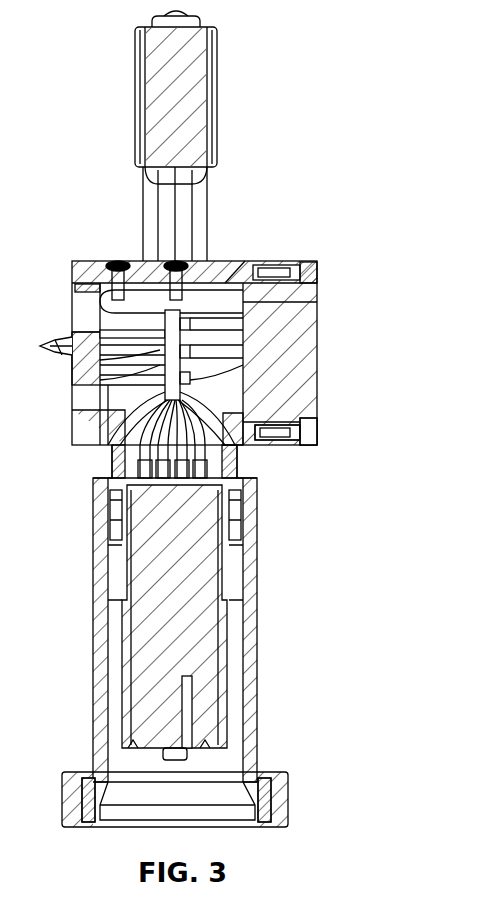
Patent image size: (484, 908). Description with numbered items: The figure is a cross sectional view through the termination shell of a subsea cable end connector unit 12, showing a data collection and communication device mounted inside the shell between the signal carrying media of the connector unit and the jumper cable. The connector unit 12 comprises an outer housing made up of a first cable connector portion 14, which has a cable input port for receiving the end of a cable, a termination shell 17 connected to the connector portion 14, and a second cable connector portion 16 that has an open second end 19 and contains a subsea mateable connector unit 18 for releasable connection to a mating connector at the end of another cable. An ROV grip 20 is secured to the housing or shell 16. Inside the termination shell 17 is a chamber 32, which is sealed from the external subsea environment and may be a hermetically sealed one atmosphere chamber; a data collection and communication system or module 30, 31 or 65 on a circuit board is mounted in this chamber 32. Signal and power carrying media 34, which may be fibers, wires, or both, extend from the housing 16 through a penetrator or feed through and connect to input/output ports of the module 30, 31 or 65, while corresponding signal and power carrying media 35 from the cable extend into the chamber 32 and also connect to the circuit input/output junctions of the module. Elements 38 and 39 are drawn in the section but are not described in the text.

The end connector unit 12 is at (322, 497).
The first cable connector portion 14 is at (80, 265).
The second cable connector portion 16 is at (248, 630).
The termination shell 17 is at (235, 265).
The subsea mateable connector unit 18 is at (215, 692).
The open second end 19 is at (160, 797).
The ROV grip 20 is at (197, 110).
The data collection and communication module 30 is at (300, 420).
The data collection and communication module 31 is at (328, 425).
The chamber 32 is at (253, 342).
The signal and power carrying media 34 is at (130, 443).
The signal and power carrying media 35 is at (237, 248).
The bolt 38 is at (124, 265).
The slot 39 is at (312, 262).
The data collection and communication module 65 is at (363, 428).